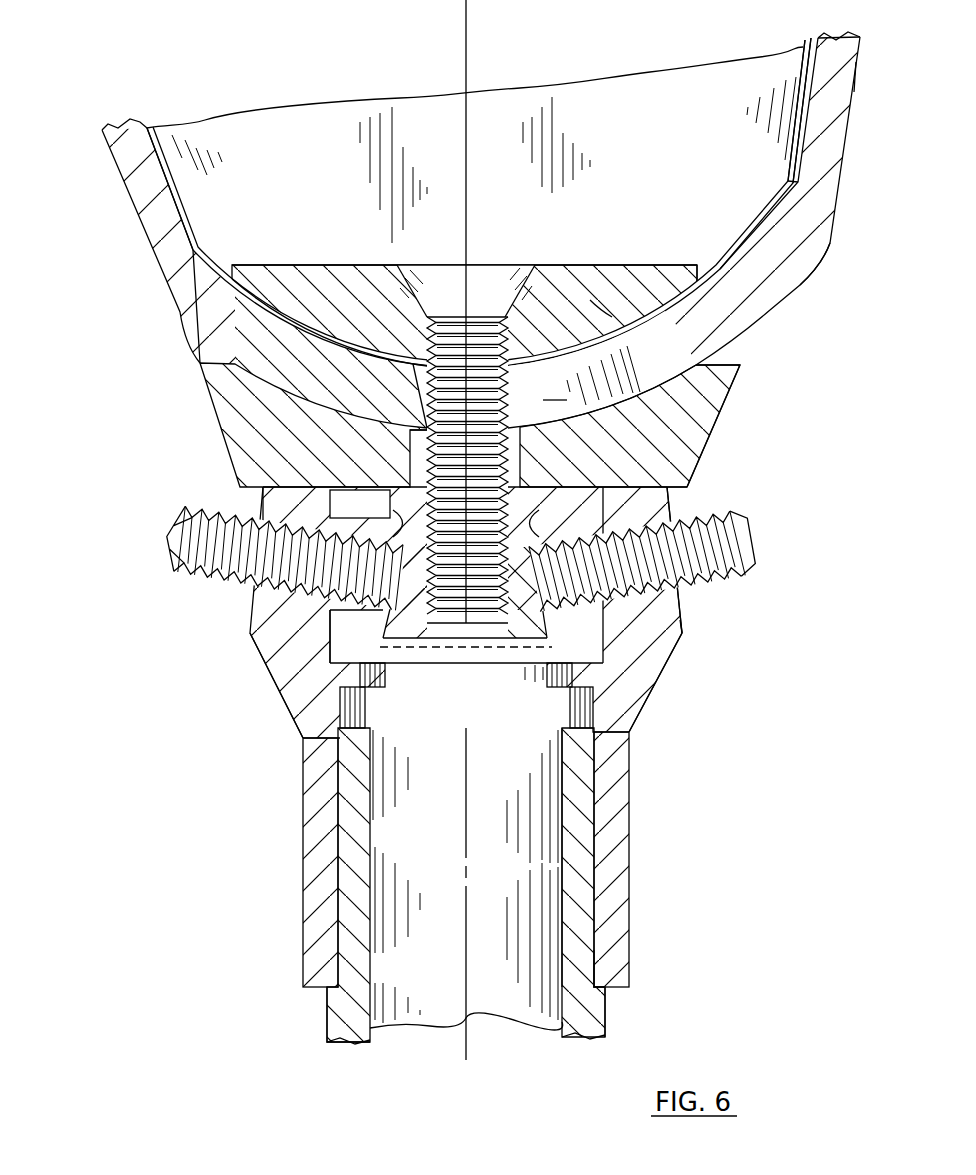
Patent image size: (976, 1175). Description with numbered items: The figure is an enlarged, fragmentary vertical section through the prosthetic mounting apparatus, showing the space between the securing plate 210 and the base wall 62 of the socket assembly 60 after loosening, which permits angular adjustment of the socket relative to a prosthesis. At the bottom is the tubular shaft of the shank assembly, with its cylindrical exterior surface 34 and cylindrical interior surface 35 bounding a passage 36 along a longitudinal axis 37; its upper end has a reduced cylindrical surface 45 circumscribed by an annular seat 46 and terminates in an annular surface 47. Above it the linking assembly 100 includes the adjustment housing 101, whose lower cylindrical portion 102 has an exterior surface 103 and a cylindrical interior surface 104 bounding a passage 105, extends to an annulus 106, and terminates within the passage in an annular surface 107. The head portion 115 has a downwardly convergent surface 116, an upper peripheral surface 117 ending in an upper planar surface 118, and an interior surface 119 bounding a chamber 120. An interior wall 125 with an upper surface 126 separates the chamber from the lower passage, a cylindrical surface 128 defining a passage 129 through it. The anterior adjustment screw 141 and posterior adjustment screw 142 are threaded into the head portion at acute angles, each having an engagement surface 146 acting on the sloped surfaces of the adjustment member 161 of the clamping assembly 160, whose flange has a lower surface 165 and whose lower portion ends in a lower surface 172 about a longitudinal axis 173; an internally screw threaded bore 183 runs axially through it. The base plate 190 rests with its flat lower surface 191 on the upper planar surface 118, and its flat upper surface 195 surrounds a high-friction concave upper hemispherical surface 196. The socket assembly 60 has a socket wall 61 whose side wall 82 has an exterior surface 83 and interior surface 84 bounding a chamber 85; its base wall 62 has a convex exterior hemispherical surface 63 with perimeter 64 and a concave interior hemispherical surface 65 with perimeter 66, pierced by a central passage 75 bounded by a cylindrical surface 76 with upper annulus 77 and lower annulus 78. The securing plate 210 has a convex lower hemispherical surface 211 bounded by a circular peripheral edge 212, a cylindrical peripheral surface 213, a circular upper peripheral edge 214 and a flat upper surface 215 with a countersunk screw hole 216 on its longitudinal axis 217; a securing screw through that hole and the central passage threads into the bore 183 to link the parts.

The cylindrical exterior surface 34 is at (327, 1022).
The cylindrical interior surface 35 is at (370, 958).
The passage 36 is at (530, 847).
The longitudinal axis 37 is at (465, 827).
The reduced cylindrical surface 45 is at (595, 777).
The annular seat 46 is at (602, 980).
The annular surface 47 is at (585, 710).
The socket assembly 60 is at (479, 217).
The socket wall 61 is at (165, 212).
The base wall 62 is at (260, 355).
The convex exterior hemispherical surface 63 is at (776, 308).
The perimeter 64 is at (832, 243).
The concave interior hemispherical surface 65 is at (746, 248).
The perimeter 66 is at (791, 182).
The central passage 75 is at (567, 372).
The cylindrical surface 76 is at (602, 366).
The upper annulus 77 is at (611, 320).
The lower annulus 78 is at (651, 436).
The side wall 82 is at (858, 56).
The exterior surface 83 is at (855, 92).
The interior surface 84 is at (812, 60).
The chamber 85 is at (555, 130).
The linking assembly 100 is at (445, 767).
The adjustment housing 101 is at (438, 856).
The lower cylindrical portion 102 is at (317, 848).
The exterior surface 103 is at (303, 928).
The cylindrical interior surface 104 is at (577, 903).
The passage 105 is at (583, 863).
The annulus 106 is at (617, 990).
The annular surface 107 is at (303, 740).
The head portion 115 is at (683, 628).
The downwardly convergent surface 116 is at (670, 663).
The upper peripheral surface 117 is at (677, 598).
The upper planar surface 118 is at (645, 482).
The interior surface 119 is at (338, 627).
The chamber 120 is at (475, 624).
The interior wall 125 is at (300, 705).
The upper surface 126 is at (587, 653).
The cylindrical surface 128 is at (538, 678).
The passage 129 is at (448, 673).
The anterior adjustment screw 141 is at (190, 540).
The posterior adjustment screw 142 is at (733, 548).
The engagement surface 146 is at (405, 534).
The clamping assembly 160 is at (372, 254).
The adjustment member 161 is at (385, 615).
The lower surface 165 is at (396, 517).
The lower surface 172 is at (417, 667).
The longitudinal axis 173 is at (413, 387).
The internally screw threaded bore 183 is at (518, 455).
The base plate 190 is at (279, 425).
The flat lower surface 191 is at (668, 492).
The flat upper surface 195 is at (210, 360).
The concave upper hemispherical surface 196 is at (700, 367).
The securing plate 210 is at (464, 270).
The convex lower hemispherical surface 211 is at (293, 340).
The circular peripheral edge 212 is at (213, 284).
The cylindrical peripheral surface 213 is at (215, 271).
The circular upper peripheral edge 214 is at (697, 262).
The flat upper surface 215 is at (586, 262).
The countersunk screw hole 216 is at (399, 277).
The longitudinal axis 217 is at (470, 236).